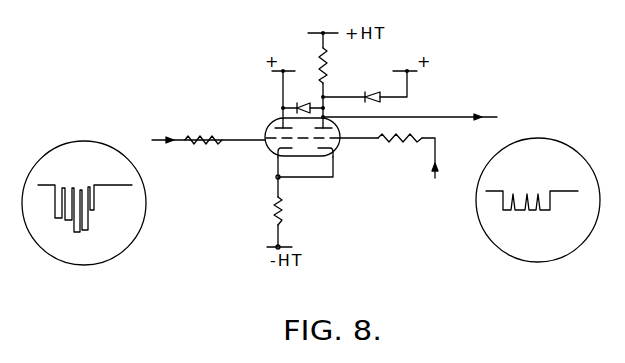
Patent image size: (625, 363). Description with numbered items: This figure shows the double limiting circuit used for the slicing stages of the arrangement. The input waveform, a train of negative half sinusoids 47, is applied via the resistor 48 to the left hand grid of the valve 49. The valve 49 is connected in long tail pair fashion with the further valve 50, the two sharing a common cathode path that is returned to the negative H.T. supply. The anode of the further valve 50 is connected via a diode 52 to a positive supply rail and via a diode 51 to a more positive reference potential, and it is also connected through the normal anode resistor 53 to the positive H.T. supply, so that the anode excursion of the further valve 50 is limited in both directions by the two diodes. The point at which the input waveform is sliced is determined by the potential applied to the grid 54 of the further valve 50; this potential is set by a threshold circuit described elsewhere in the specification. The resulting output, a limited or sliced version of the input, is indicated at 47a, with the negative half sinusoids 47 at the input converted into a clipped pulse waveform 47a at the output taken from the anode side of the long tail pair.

The negative half sinusoids 47 is at (85, 165).
The output waveform (clipped pulse) 47a is at (540, 148).
The resistor 48 is at (203, 130).
The valve 49 is at (265, 128).
The further valve 50 is at (335, 148).
The diode 51 is at (301, 97).
The diode 52 is at (372, 85).
The anode load resistor 53 is at (310, 64).
The grid 54 is at (325, 136).